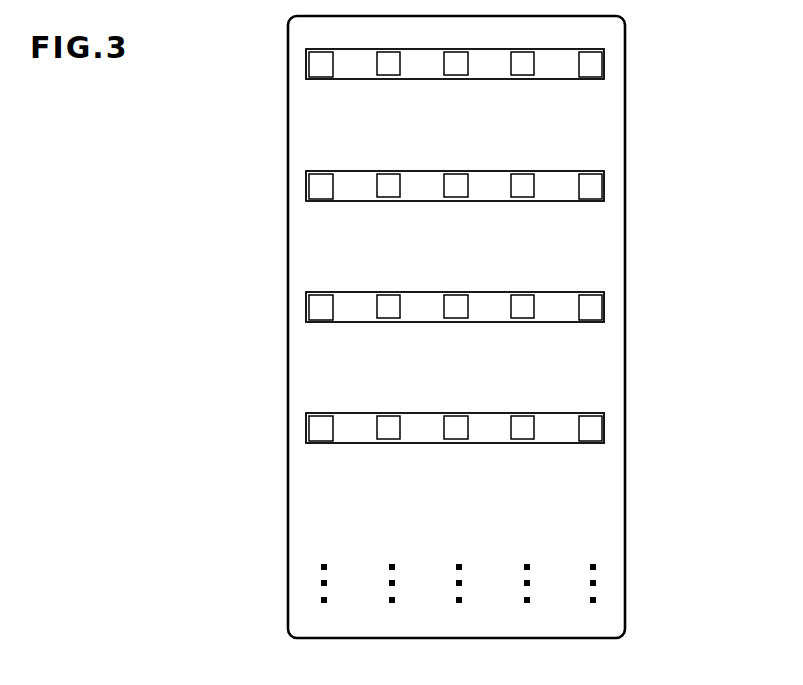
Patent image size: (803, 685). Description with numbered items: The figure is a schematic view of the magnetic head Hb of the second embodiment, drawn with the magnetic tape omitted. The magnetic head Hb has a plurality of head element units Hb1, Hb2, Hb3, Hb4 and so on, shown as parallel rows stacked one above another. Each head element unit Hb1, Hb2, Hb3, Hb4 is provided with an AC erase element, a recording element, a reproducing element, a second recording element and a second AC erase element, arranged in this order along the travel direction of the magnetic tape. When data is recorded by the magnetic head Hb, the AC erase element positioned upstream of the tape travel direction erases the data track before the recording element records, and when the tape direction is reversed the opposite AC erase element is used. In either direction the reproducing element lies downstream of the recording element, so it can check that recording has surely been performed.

The magnetic head Hb is at (641, 54).
The head element unit Hb1 is at (306, 65).
The head element unit Hb2 is at (306, 187).
The head element unit Hb3 is at (306, 308).
The head element unit Hb4 is at (306, 429).